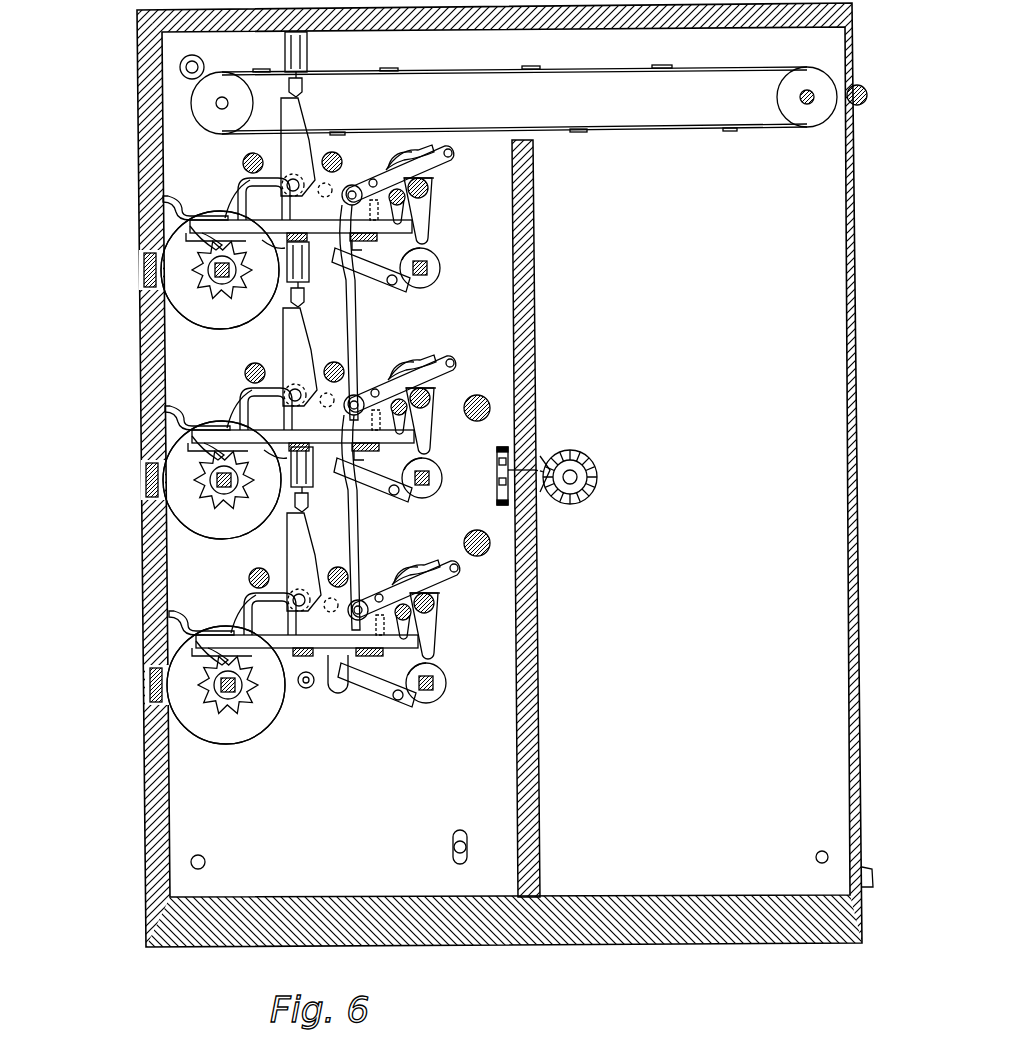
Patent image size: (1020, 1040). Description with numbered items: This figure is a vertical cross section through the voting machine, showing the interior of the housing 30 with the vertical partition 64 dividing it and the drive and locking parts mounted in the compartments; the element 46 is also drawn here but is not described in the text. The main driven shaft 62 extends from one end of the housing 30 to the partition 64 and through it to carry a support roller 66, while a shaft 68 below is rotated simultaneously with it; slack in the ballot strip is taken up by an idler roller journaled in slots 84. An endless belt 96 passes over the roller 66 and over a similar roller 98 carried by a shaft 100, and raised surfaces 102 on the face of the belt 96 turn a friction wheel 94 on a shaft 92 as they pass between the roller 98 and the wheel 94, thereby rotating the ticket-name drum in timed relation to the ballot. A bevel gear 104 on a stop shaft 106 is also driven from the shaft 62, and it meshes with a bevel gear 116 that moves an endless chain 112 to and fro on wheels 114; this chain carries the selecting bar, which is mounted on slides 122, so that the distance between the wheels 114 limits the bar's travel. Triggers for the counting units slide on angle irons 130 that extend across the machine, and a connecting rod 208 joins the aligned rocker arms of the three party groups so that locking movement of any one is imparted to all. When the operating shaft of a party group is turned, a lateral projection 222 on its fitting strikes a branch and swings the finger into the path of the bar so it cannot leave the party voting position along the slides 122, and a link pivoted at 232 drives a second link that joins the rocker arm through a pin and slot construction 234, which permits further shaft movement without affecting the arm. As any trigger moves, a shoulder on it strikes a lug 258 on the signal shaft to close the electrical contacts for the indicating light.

The housing 30 is at (600, 940).
The partition wall 46 is at (840, 400).
The shaft 62 is at (798, 97).
The vertical partition 64 is at (730, 753).
The support roller 66 is at (822, 83).
The shaft 68 is at (815, 858).
The slots 84 is at (458, 830).
The shaft 92 is at (202, 62).
The friction wheel 94 is at (194, 60).
The endless belt 96 is at (630, 126).
The roller 98 is at (236, 106).
The shaft 100 is at (214, 103).
The raised surfaces 102 is at (388, 67).
The bevel gear 104 is at (590, 462).
The stop shaft 106 is at (578, 477).
The endless chain 112 is at (508, 448).
The wheels 114 is at (510, 468).
The bevel gear 116 is at (548, 460).
The slides 122 is at (490, 404).
The angle irons 130 is at (369, 247).
The connecting rod 208 is at (358, 330).
The lateral projection 222 is at (354, 673).
The pivotal mounting 232 is at (234, 715).
The pin and slot construction 234 is at (337, 544).
The lug 258 is at (371, 457).